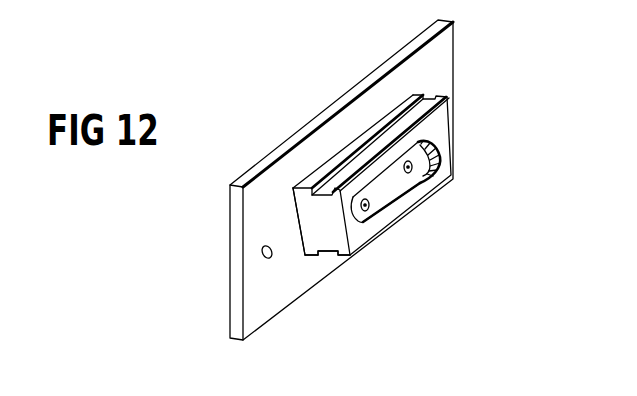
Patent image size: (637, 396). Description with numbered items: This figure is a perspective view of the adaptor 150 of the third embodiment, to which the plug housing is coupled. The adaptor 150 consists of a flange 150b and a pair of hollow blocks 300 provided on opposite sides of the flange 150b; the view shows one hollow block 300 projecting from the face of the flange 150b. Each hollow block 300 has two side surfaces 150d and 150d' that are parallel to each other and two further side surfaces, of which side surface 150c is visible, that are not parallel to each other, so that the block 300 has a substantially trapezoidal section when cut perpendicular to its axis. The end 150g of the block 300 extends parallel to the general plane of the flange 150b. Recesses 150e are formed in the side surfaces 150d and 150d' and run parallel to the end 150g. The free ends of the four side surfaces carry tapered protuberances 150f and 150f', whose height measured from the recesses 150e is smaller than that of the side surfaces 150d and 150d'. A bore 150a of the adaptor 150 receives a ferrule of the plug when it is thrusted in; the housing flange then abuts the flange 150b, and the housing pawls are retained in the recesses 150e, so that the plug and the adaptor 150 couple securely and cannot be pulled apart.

The hollow block 300 is at (380, 124).
The adaptor 150 is at (451, 294).
The bore 150a is at (370, 206).
The flange 150b is at (265, 163).
The side surface 150c is at (302, 205).
The side surface 150d is at (350, 125).
The side surface 150d' is at (323, 299).
The recess 150e is at (314, 257).
The tapered protuberance 150f is at (473, 84).
The tapered protuberance 150f' is at (443, 176).
The end of the block 150g is at (433, 134).